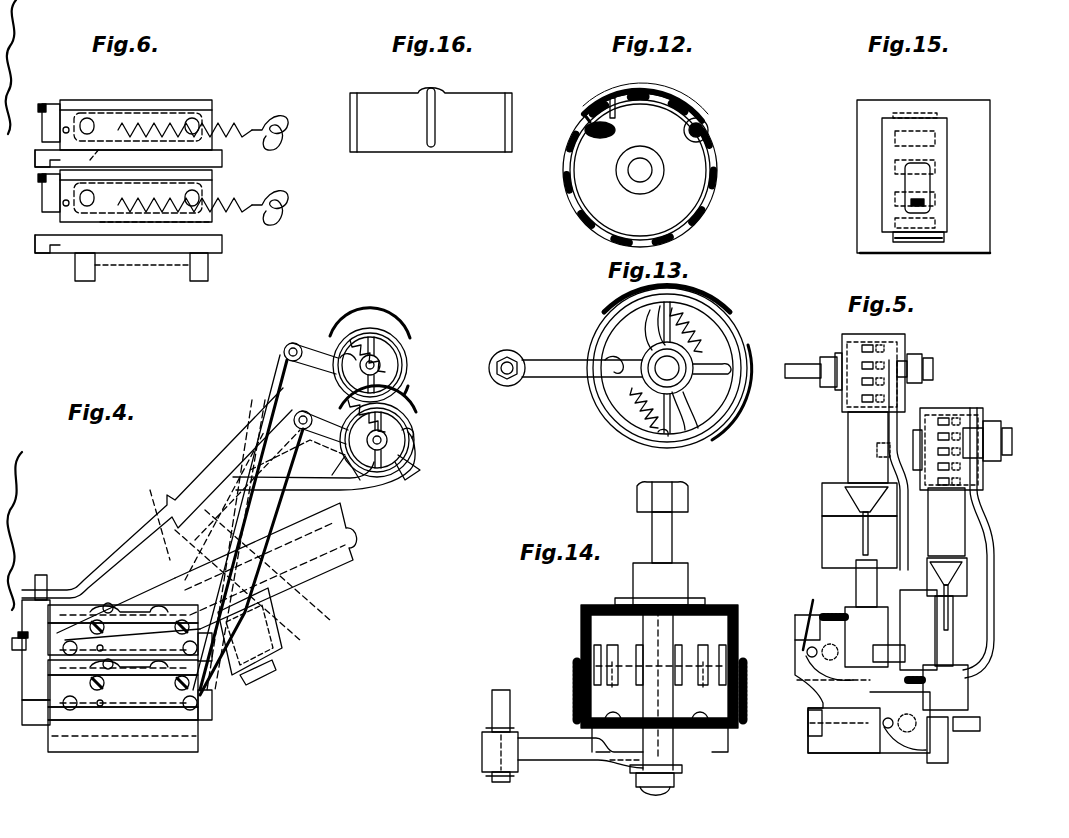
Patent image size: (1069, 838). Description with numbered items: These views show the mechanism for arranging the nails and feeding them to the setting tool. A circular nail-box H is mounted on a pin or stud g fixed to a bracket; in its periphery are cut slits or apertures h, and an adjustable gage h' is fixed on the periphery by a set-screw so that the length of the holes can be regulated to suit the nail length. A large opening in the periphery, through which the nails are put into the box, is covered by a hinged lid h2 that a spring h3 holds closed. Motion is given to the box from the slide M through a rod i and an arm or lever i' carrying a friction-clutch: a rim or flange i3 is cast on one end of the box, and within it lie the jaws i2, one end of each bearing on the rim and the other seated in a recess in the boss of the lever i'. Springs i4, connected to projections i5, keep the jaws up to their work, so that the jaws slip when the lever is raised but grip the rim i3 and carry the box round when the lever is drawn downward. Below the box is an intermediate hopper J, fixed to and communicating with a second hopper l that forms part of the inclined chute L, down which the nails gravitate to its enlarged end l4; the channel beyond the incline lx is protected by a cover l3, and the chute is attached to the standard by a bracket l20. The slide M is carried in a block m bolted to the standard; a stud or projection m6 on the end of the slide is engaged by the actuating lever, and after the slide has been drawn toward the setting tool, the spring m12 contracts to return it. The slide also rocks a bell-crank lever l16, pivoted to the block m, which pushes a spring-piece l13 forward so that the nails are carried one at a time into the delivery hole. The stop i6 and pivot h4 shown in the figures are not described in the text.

In FIG. 6, the slide M is at (45, 165).
In FIG. 5, the slide M is at (950, 748).
In FIG. 4, the slide M is at (212, 708).
In FIG. 5, the block m is at (800, 672).
In FIG. 4, the block m is at (198, 733).
In FIG. 6, the stud or projection m6 is at (82, 281).
In FIG. 5, the stud or projection m6 is at (880, 640).
In FIG. 6, the spring m12 is at (220, 134).
In FIG. 5, the second hopper l is at (906, 484).
In FIG. 4, the second hopper l is at (232, 470).
In FIG. 5, the cover l3 is at (904, 612).
In FIG. 5, the enlarged end l4 is at (906, 658).
In FIG. 5, the spring-piece l13 is at (808, 612).
In FIG. 6, the bell-crank lever l16 is at (42, 205).
In FIG. 5, the bell-crank lever l16 is at (805, 648).
In FIG. 4, the bell-crank lever l16 is at (30, 688).
In FIG. 6, the bracket l20 is at (140, 136).
In FIG. 5, the bracket l20 is at (868, 625).
In FIG. 4, the bracket l20 is at (130, 670).
In FIG. 5, the incline lx is at (868, 536).
In FIG. 4, the inclined chute L is at (189, 514).
In FIG. 4, the intermediate hopper J is at (331, 440).
In FIG. 12, the nail-box H is at (572, 178).
In FIG. 15, the nail-box H is at (923, 176).
In FIG. 13, the nail-box H is at (748, 355).
In FIG. 14, the nail-box H is at (583, 624).
In FIG. 5, the nail-box H is at (800, 340).
In FIG. 4, the nail-box H is at (406, 358).
In FIG. 12, the slits or apertures h is at (638, 172).
In FIG. 14, the slits or apertures h is at (660, 656).
In FIG. 16, the adjustable gage h' is at (431, 120).
In FIG. 15, the adjustable gage h' is at (918, 253).
In FIG. 13, the adjustable gage h' is at (654, 369).
In FIG. 14, the adjustable gage h' is at (564, 680).
In FIG. 4, the adjustable gage h' is at (378, 426).
In FIG. 15, the hinged lid h2 is at (947, 212).
In FIG. 13, the hinged lid h2 is at (614, 310).
In FIG. 4, the hinged lid h2 is at (366, 330).
In FIG. 12, the spring h3 is at (612, 98).
In FIG. 15, the spring h3 is at (912, 205).
In FIG. 12, the cap pivot h4 is at (590, 100).
In FIG. 12, the pin or stud g is at (648, 172).
In FIG. 13, the pin or stud g is at (672, 372).
In FIG. 14, the pin or stud g is at (700, 786).
In FIG. 5, the pin or stud g is at (800, 378).
In FIG. 5, the rod i is at (951, 547).
In FIG. 4, the rod i is at (248, 525).
In FIG. 13, the arm or lever i' is at (610, 361).
In FIG. 14, the arm or lever i' is at (562, 736).
In FIG. 5, the arm or lever i' is at (954, 395).
In FIG. 4, the arm or lever i' is at (316, 387).
In FIG. 13, the jaws i2 is at (660, 330).
In FIG. 4, the jaws i2 is at (366, 405).
In FIG. 13, the rim or flange i3 is at (620, 426).
In FIG. 14, the rim or flange i3 is at (584, 726).
In FIG. 5, the rim or flange i3 is at (906, 398).
In FIG. 4, the rim or flange i3 is at (410, 370).
In FIG. 13, the springs i4 is at (700, 340).
In FIG. 4, the springs i4 is at (395, 350).
In FIG. 13, the projections i5 is at (630, 362).
In FIG. 4, the projections i5 is at (342, 352).
In FIG. 4, the stop i6 is at (410, 392).